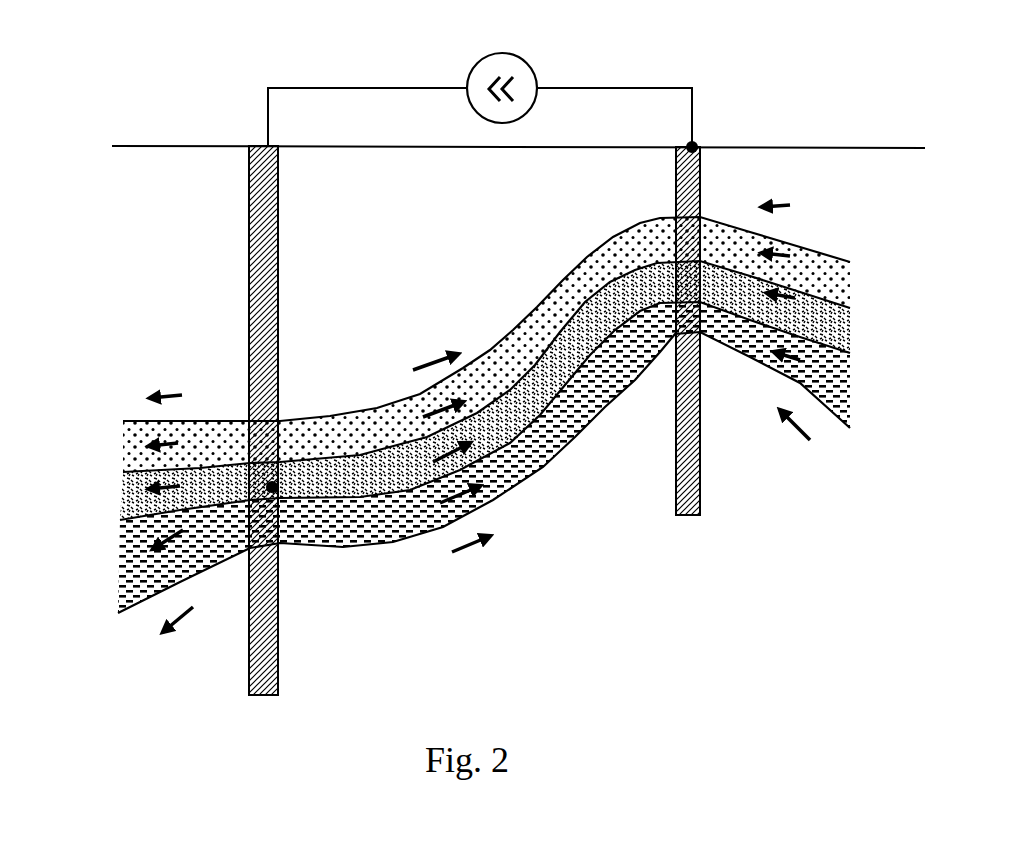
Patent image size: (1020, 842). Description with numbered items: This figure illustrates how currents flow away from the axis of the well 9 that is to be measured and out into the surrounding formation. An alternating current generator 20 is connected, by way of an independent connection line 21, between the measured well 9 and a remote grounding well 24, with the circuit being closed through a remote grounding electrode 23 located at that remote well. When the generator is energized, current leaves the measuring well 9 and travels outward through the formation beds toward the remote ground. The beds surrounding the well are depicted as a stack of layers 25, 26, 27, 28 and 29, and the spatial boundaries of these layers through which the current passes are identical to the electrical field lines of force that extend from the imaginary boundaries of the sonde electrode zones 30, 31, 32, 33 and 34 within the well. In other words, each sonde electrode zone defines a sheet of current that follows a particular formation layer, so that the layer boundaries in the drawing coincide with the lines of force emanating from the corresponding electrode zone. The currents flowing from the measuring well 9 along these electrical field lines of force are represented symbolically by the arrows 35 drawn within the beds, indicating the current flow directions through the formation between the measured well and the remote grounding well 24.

The well to be measured 9 is at (255, 200).
The alternating current generator 20 is at (530, 70).
The independent connection line 21 is at (265, 87).
The remote grounding electrode 23 is at (695, 146).
The remote grounding well 24 is at (703, 200).
The formation bed layer 25 is at (600, 211).
The formation bed layer 26 is at (603, 265).
The formation bed layer 27 is at (587, 312).
The formation bed layer 28 is at (590, 397).
The formation bed layer 29 is at (600, 452).
The sonde electrode zone 30 is at (248, 398).
The sonde electrode zone 31 is at (248, 440).
The sonde electrode zone 32 is at (248, 477).
The sonde electrode zone 33 is at (248, 520).
The sonde electrode zone 34 is at (248, 560).
The current flow directions 35 is at (422, 366).